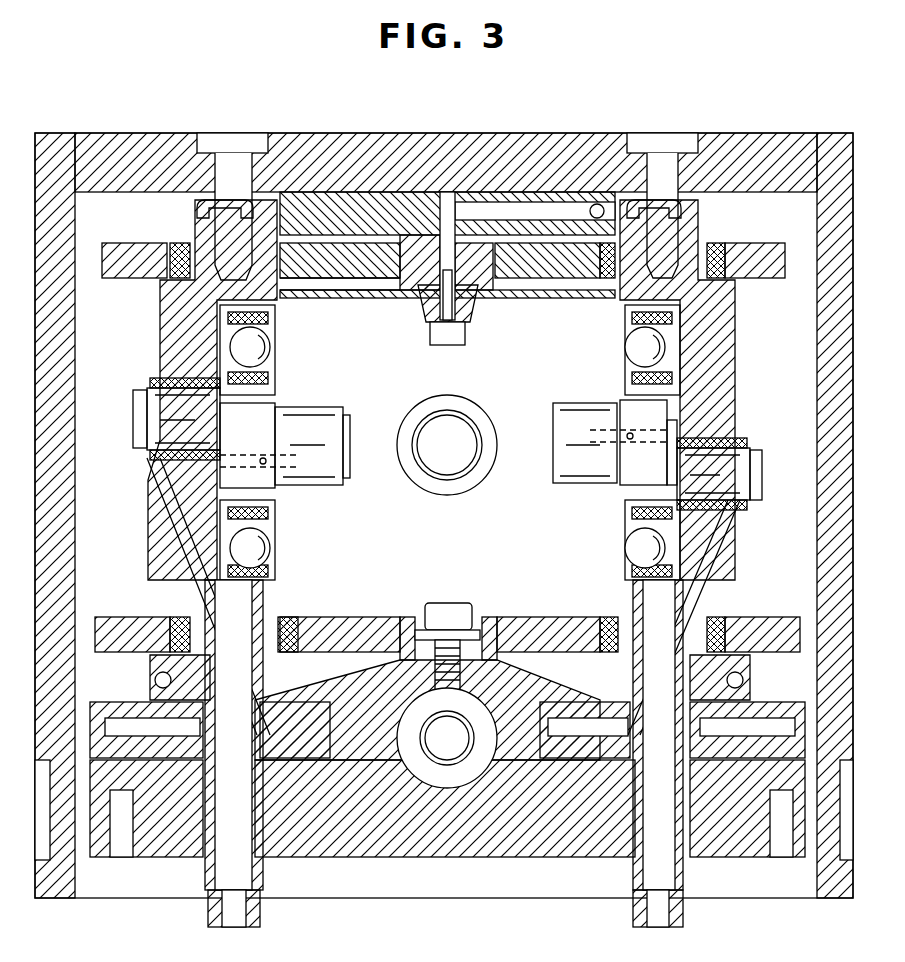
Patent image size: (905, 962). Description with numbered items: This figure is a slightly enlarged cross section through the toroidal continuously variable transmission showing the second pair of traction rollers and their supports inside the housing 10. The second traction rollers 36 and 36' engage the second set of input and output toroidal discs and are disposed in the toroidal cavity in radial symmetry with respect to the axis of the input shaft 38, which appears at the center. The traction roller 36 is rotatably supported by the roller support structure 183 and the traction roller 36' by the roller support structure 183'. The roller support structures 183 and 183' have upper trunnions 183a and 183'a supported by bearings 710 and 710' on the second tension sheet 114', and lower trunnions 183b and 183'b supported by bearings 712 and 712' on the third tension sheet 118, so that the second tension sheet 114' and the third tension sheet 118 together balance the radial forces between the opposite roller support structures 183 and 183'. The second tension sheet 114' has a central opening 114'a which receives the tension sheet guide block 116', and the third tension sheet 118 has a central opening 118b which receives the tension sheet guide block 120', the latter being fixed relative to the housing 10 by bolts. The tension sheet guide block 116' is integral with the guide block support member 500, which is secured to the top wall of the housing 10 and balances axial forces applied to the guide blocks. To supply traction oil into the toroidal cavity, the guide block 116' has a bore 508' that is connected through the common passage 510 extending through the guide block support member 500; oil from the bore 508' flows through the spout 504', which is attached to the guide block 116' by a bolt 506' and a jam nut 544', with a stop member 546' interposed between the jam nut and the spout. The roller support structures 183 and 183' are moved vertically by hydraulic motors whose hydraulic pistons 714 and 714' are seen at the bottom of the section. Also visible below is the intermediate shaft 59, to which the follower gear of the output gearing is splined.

The housing 10 is at (745, 133).
The guide block support member 500 is at (345, 198).
The bore 508' is at (447, 206).
The opening 114'a is at (547, 170).
The common passage 510 is at (595, 205).
The jam nut 544' is at (458, 195).
The upper trunnion 183'a is at (218, 183).
The upper trunnion 183a is at (690, 258).
The bearing 710' is at (146, 242).
The bearing 710 is at (752, 243).
The roller support structure 183' is at (184, 467).
The roller support structure 183 is at (707, 467).
The tension sheet guide block 116' is at (345, 291).
The second tension sheet 114' is at (547, 289).
The stop member 546' is at (340, 325).
The bolt 506' is at (438, 355).
The spout 504' is at (468, 309).
The second traction roller 36' is at (259, 433).
The second traction roller 36 is at (631, 444).
The input shaft 38 is at (460, 456).
The lower trunnion 183'b is at (150, 640).
The lower trunnion 183b is at (725, 642).
The bearing 712' is at (311, 615).
The bearing 712 is at (762, 614).
The tension sheet guide block 120' is at (427, 619).
The opening 118b is at (485, 620).
The third tension sheet 118 is at (523, 616).
The hydraulic piston 714' is at (213, 763).
The hydraulic piston 714 is at (672, 763).
The intermediate shaft 59 is at (452, 780).